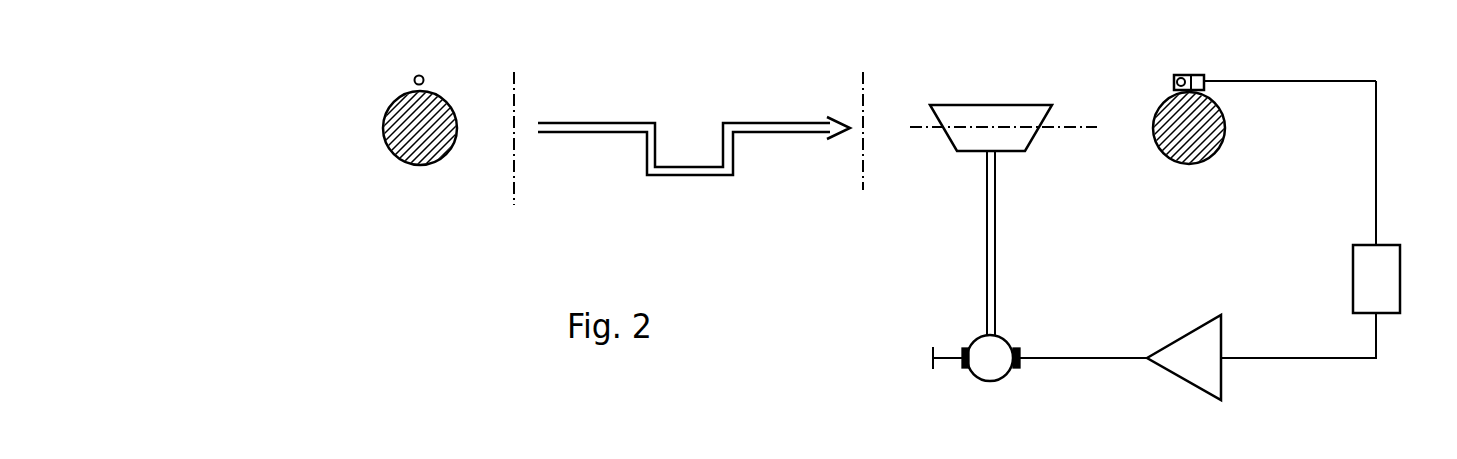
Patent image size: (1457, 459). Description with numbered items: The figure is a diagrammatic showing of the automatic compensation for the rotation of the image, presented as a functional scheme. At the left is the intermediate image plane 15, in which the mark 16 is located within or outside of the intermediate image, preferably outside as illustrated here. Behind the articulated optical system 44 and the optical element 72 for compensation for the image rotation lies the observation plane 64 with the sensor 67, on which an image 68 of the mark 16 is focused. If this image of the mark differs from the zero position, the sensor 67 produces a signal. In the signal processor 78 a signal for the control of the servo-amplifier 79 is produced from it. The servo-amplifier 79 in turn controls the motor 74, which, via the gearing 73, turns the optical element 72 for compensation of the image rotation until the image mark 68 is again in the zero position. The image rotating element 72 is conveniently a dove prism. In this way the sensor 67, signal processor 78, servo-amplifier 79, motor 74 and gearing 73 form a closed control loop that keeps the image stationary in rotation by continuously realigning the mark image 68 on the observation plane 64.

The intermediate image plane 15 is at (410, 162).
The mark 16 is at (422, 76).
The articulated optical system 44 is at (645, 161).
The observation plane 64 is at (1215, 133).
The sensor 67 is at (1199, 75).
The image of the mark 68 is at (1174, 80).
The optical element for compensation for the image rotation 72 is at (965, 142).
The gearing 73 is at (996, 247).
The motor 74 is at (976, 378).
The signal processor 78 is at (1388, 302).
The servo-amplifier 79 is at (1206, 381).